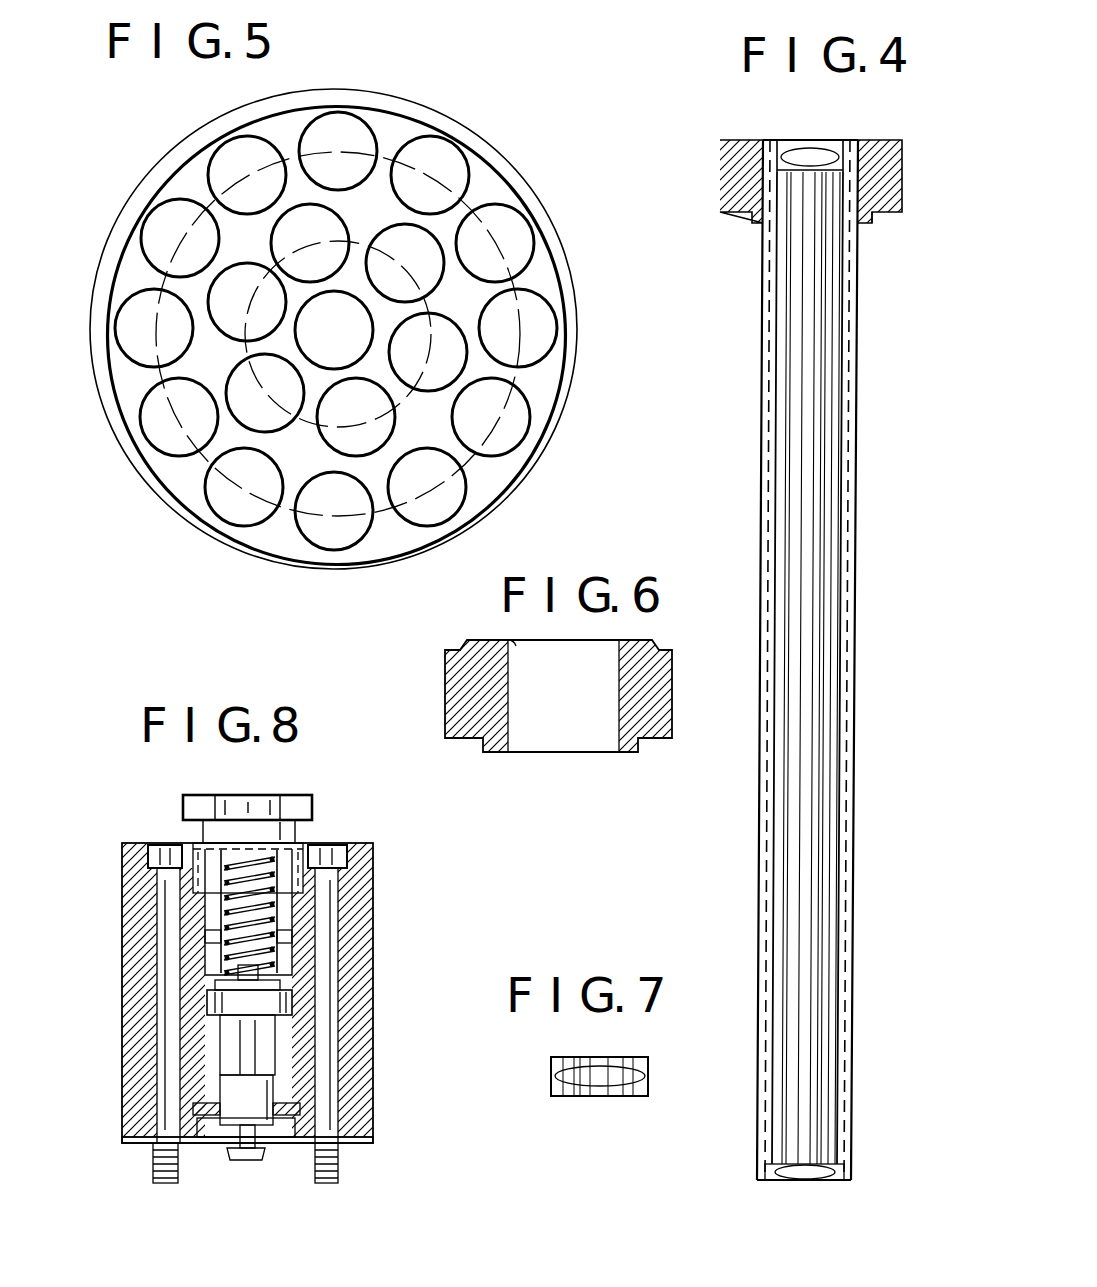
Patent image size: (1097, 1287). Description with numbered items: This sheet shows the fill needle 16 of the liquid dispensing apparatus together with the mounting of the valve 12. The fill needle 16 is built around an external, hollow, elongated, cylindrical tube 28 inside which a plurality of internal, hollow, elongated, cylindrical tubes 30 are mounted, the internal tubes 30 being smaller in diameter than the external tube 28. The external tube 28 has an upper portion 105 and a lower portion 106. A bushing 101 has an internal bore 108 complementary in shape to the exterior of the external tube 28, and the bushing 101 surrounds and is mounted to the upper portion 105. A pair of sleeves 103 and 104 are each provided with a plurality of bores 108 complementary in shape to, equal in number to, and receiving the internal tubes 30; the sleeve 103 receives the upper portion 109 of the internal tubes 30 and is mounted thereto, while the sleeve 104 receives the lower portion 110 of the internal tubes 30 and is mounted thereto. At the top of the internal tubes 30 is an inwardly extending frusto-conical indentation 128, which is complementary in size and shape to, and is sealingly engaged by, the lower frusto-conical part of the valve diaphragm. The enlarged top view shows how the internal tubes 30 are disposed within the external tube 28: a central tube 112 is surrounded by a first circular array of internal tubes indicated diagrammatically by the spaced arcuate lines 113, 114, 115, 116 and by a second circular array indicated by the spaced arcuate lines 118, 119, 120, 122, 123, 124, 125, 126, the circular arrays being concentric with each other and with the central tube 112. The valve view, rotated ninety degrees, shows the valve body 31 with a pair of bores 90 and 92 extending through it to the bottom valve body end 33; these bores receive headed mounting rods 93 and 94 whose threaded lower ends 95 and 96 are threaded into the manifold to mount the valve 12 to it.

In FIG. 8, the valve 12 is at (107, 888).
In FIG. 4, the fill needle 16 is at (750, 301).
In FIG. 5, the external tube 28 is at (540, 205).
In FIG. 4, the external tube 28 is at (860, 290).
In FIG. 5, the internal tubes 30 is at (441, 228).
In FIG. 4, the internal tubes 30 is at (820, 408).
In FIG. 8, the valve body 31 is at (386, 833).
In FIG. 8, the bottom valve body end 33 is at (379, 1155).
In FIG. 8, the bore 90 is at (330, 935).
In FIG. 8, the bore 92 is at (160, 918).
In FIG. 8, the headed mounting rod 93 is at (340, 1000).
In FIG. 8, the headed mounting rod 94 is at (163, 985).
In FIG. 8, the threaded lower end 95 is at (335, 1168).
In FIG. 8, the threaded lower end 96 is at (150, 1160).
In FIG. 4, the bushing 101 is at (902, 155).
In FIG. 6, the bushing 101 is at (672, 660).
In FIG. 4, the sleeve 103 is at (832, 140).
In FIG. 7, the sleeve 103 is at (648, 1072).
In FIG. 4, the sleeve 104 is at (812, 1180).
In FIG. 4, the upper portion 105 is at (879, 192).
In FIG. 4, the lower portion 106 is at (741, 1151).
In FIG. 6, the bore 108 is at (510, 635).
In FIG. 7, the bore 108 is at (580, 1096).
In FIG. 4, the upper portion 109 is at (790, 160).
In FIG. 4, the lower portion 110 is at (797, 1180).
In FIG. 5, the central tube 112 is at (373, 322).
In FIG. 5, the arcuate line 113 is at (365, 220).
In FIG. 5, the arcuate line 114 is at (413, 370).
In FIG. 5, the arcuate line 115 is at (300, 413).
In FIG. 5, the arcuate line 116 is at (246, 300).
In FIG. 5, the arcuate line 118 is at (500, 255).
In FIG. 5, the arcuate line 119 is at (530, 425).
In FIG. 5, the arcuate line 120 is at (437, 500).
In FIG. 5, the arcuate line 122 is at (293, 497).
In FIG. 5, the arcuate line 123 is at (213, 458).
In FIG. 5, the arcuate line 124 is at (162, 284).
In FIG. 5, the arcuate line 125 is at (245, 175).
In FIG. 5, the arcuate line 126 is at (401, 165).
In FIG. 4, the frusto-conical indentation 128 is at (810, 128).